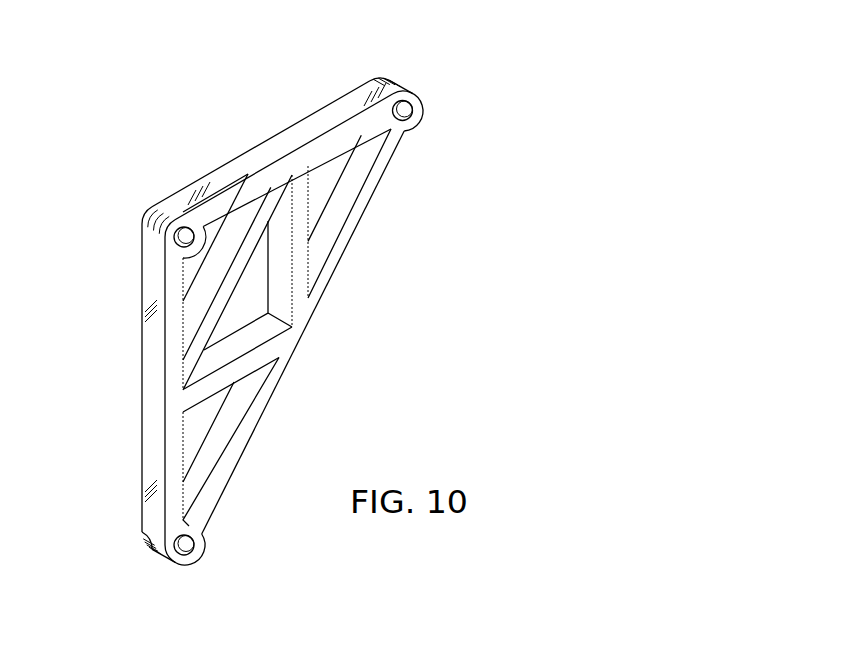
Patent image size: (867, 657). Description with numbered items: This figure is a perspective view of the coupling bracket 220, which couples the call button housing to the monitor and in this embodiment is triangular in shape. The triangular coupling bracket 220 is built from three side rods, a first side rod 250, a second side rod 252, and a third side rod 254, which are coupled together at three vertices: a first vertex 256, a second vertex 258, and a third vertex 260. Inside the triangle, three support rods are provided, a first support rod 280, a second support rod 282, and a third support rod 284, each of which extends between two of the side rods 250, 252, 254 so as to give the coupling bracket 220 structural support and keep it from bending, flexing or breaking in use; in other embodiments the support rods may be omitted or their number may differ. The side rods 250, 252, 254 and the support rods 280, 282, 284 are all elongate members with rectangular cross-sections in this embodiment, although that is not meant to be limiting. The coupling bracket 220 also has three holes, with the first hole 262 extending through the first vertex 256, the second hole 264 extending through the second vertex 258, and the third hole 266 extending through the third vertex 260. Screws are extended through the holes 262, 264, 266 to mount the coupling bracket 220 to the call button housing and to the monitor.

The coupling bracket 220 is at (464, 115).
The first side rod 250 is at (277, 145).
The second side rod 252 is at (148, 377).
The third side rod 254 is at (300, 320).
The first vertex 256 is at (150, 230).
The second vertex 258 is at (398, 90).
The third vertex 260 is at (153, 556).
The first hole 262 is at (184, 236).
The second hole 264 is at (402, 108).
The third hole 266 is at (186, 545).
The first support rod 280 is at (205, 297).
The second support rod 282 is at (298, 242).
The third support rod 284 is at (233, 370).